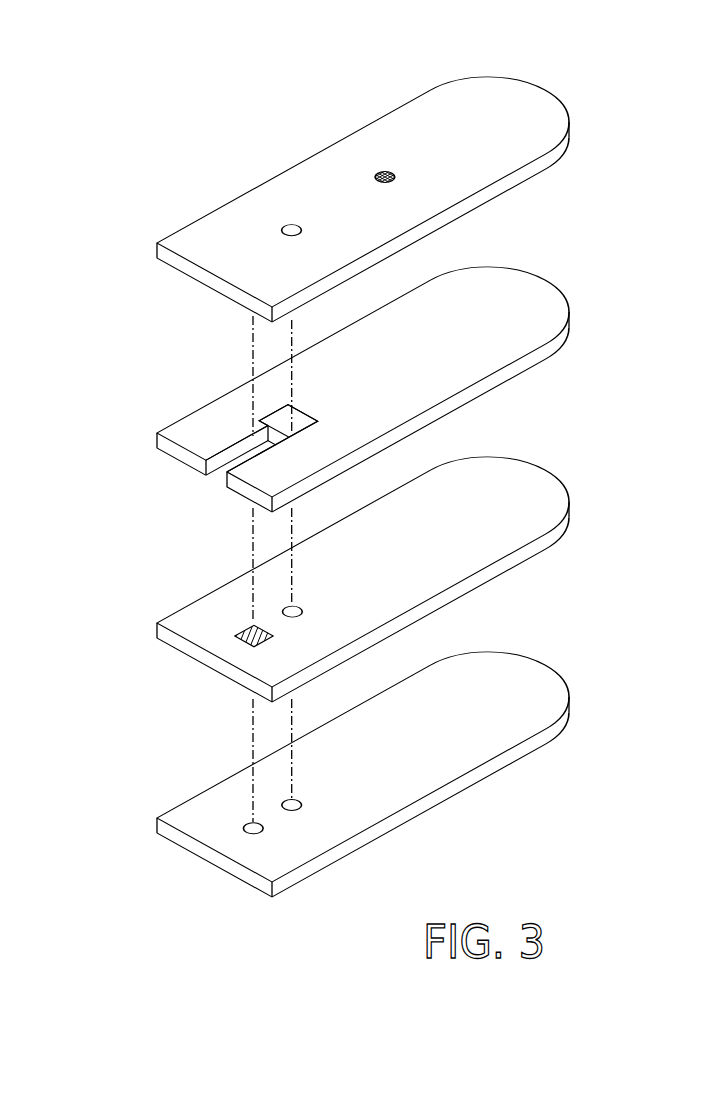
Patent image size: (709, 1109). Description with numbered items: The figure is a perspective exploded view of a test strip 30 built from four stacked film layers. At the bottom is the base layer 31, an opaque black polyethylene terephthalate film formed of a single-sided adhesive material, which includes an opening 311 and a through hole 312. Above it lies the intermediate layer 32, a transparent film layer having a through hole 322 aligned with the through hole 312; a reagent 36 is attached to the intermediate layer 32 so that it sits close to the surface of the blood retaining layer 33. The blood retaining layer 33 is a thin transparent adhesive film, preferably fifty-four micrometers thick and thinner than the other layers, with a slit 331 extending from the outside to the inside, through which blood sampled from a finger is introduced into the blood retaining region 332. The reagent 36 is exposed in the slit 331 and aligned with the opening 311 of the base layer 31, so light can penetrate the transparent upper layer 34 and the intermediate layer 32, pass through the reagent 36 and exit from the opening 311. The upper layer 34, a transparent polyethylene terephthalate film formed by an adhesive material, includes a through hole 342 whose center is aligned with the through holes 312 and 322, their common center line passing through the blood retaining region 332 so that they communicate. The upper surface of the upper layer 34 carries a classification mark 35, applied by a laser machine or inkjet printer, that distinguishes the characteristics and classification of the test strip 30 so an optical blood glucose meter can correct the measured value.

The test strip 30 is at (130, 84).
The base layer 31 is at (380, 786).
The opening 311 is at (245, 833).
The through hole 312 is at (292, 812).
The intermediate layer 32 is at (384, 570).
The through hole 322 is at (283, 608).
The reagent 36 is at (241, 642).
The blood retaining layer 33 is at (379, 383).
The slit 331 is at (205, 484).
The blood retaining region 332 is at (280, 417).
The upper layer 34 is at (388, 187).
The through hole 342 is at (292, 222).
The classification mark 35 is at (385, 168).